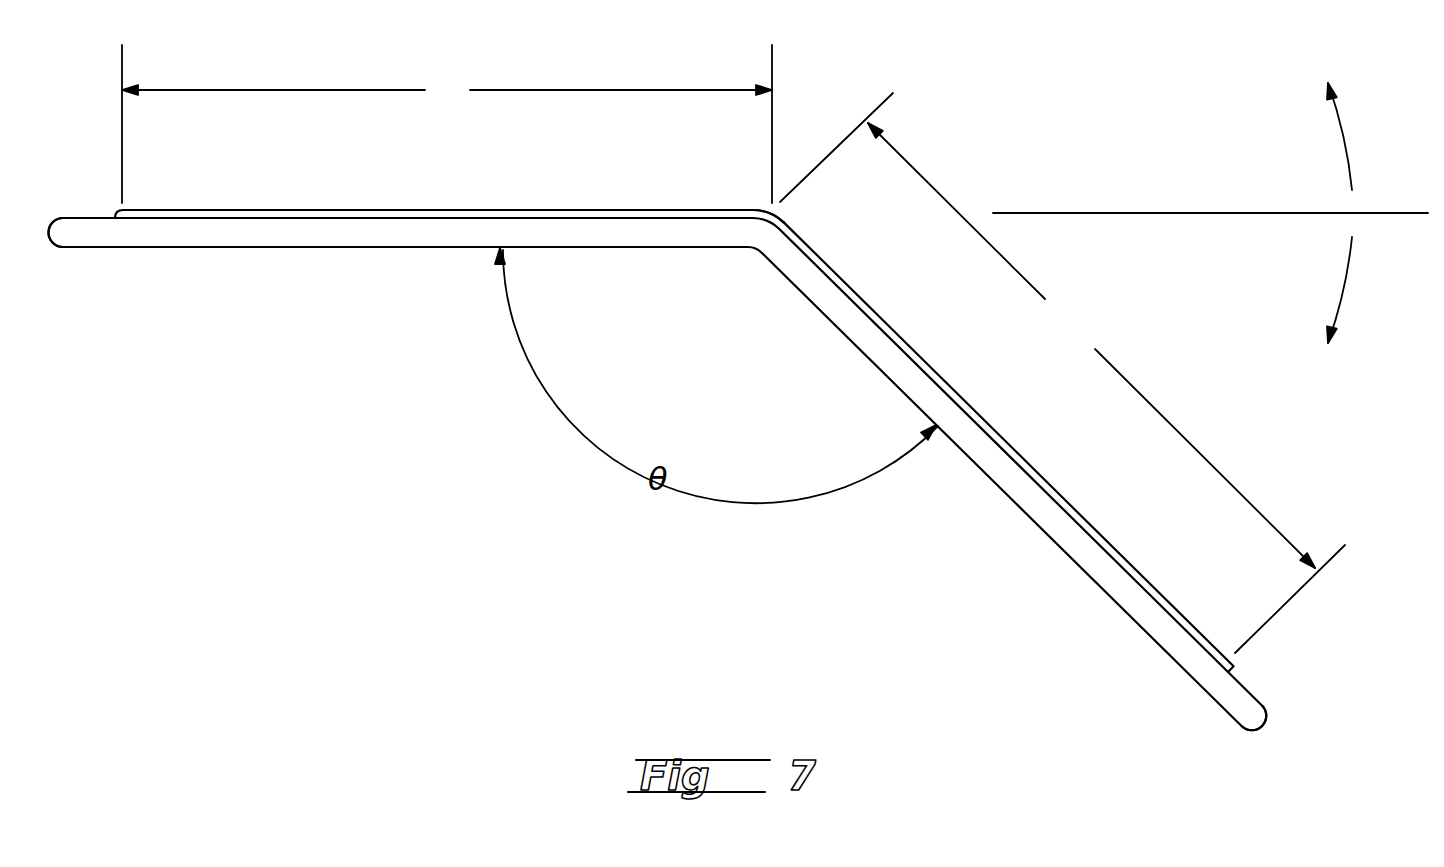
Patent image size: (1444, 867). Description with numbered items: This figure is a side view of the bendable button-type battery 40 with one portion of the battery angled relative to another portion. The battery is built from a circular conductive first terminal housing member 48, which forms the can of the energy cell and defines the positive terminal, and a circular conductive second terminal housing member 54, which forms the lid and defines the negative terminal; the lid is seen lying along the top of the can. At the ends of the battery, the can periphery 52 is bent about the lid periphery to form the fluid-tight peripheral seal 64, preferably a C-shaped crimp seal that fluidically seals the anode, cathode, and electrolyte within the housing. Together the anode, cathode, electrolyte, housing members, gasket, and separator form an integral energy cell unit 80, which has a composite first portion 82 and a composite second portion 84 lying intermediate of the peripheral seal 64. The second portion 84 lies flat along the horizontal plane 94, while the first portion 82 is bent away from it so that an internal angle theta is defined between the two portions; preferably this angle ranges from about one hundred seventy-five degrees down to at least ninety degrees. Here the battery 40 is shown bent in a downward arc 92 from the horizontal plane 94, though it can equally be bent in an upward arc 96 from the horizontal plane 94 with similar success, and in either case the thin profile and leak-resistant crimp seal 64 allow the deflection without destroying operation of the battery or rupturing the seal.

The button-type battery 40 is at (658, 427).
The first terminal housing member 48 is at (1003, 492).
The periphery of first terminal housing member 52 is at (87, 249).
The second terminal housing member 54 is at (1003, 430).
The fluid-tight peripheral seal 64 is at (1283, 692).
The energy cell unit 80 is at (655, 209).
The first portion 82 is at (1062, 373).
The second portion 84 is at (447, 124).
The downward arc 92 is at (1347, 280).
The horizontal plane 94 is at (1370, 213).
The upward arc 96 is at (1345, 132).